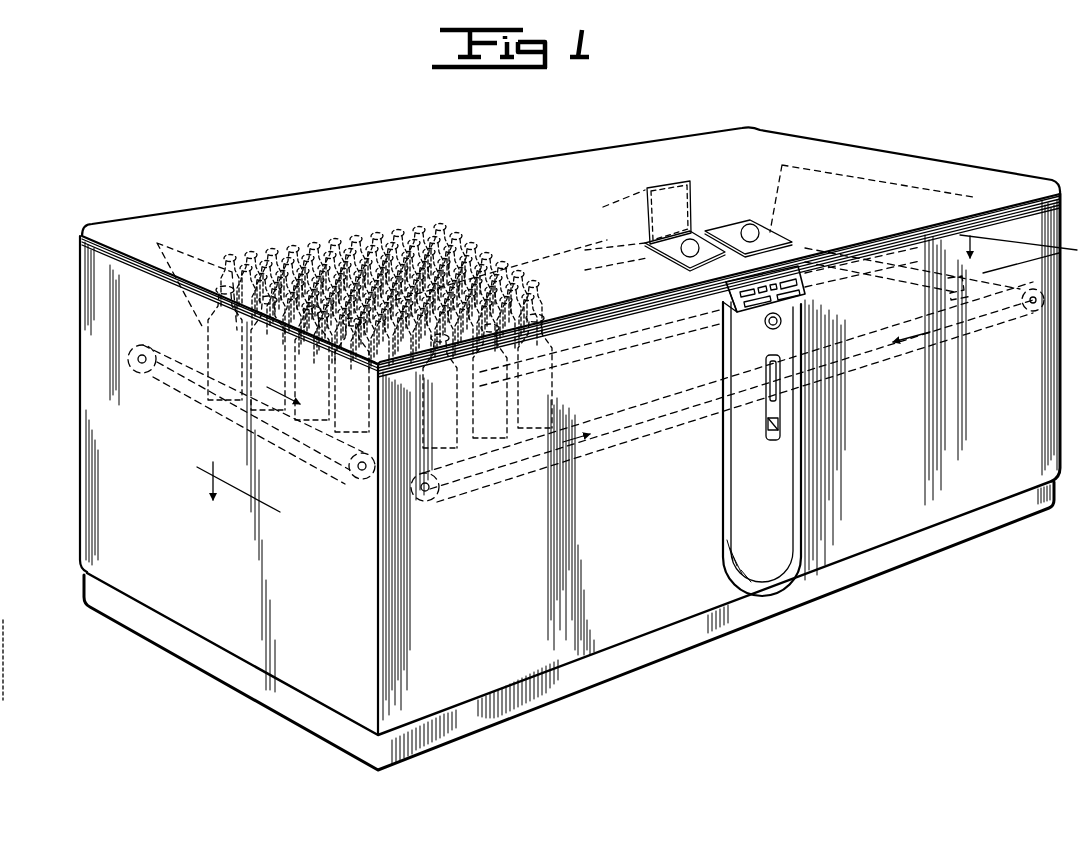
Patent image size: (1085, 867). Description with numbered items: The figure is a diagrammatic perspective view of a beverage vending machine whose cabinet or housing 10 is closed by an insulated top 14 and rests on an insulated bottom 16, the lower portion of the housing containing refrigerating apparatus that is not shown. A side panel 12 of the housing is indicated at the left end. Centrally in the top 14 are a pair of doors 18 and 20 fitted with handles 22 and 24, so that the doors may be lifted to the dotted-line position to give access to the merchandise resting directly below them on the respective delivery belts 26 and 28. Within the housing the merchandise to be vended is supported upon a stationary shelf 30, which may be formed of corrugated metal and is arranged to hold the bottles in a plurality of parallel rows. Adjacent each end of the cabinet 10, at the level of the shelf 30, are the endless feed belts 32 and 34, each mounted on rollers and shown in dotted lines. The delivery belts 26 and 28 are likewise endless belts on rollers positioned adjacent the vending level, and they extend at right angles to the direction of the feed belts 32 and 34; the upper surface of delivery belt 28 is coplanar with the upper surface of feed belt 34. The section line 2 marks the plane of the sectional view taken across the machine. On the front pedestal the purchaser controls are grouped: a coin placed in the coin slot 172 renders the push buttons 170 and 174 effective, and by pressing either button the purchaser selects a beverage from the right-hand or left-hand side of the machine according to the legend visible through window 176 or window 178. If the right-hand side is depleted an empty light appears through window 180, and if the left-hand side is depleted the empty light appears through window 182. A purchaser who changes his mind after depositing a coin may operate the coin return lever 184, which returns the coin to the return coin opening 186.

The section line 2- 2 is at (637, 380).
The housing 10 is at (1033, 443).
The side panel 12 is at (85, 458).
The insulated top 14 is at (416, 190).
The insulated bottom 16 is at (628, 657).
The door 18 is at (724, 230).
The door 20 is at (648, 243).
The handle 22 is at (760, 236).
The handle 24 is at (665, 262).
The delivery belt 26 is at (680, 393).
The delivery belt 28 is at (807, 449).
The stationary shelf 30 is at (620, 393).
The feed belt 32 is at (330, 440).
The feed belt 34 is at (984, 273).
The push button 170 is at (768, 260).
The coin slot 172 is at (783, 326).
The push button 174 is at (723, 348).
The window 176 is at (809, 294).
The window 178 is at (740, 368).
The window 180 is at (802, 282).
The window 182 is at (740, 292).
The coin return lever 184 is at (783, 395).
The return coin opening 186 is at (775, 437).